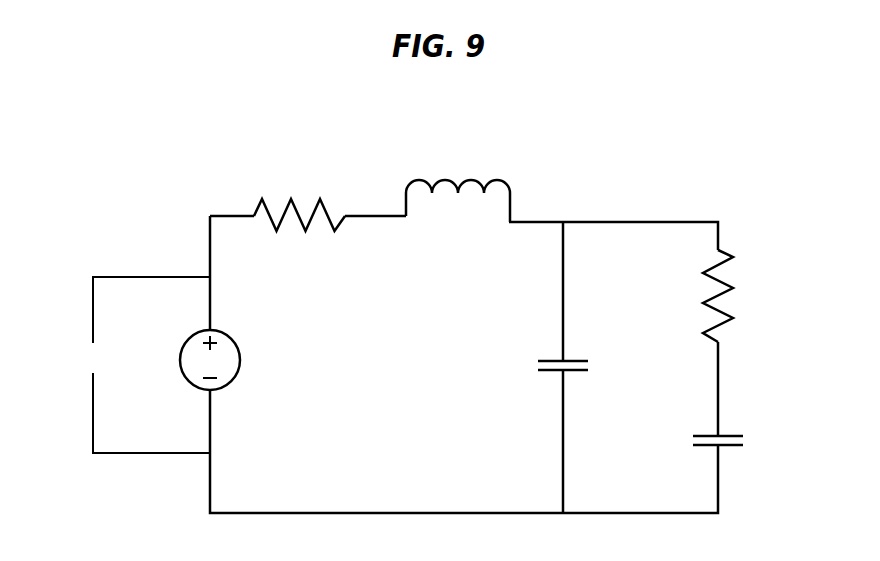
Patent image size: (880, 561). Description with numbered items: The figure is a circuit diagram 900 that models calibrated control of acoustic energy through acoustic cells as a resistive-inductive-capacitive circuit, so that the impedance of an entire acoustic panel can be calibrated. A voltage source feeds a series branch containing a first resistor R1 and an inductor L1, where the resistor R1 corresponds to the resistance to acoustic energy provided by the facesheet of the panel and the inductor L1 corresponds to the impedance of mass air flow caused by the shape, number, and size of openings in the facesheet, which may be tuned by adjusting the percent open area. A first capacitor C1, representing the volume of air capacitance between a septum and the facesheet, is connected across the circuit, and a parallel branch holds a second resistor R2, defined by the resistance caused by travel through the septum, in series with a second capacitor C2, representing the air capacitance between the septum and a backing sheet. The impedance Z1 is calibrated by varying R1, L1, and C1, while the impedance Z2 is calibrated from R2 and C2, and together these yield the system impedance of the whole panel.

The circuit diagram 900 is at (660, 160).
The resistor R1 is at (299, 200).
The inductor L1 is at (458, 185).
The capacitor C1 is at (545, 367).
The resistor R2 is at (738, 296).
The capacitor C2 is at (735, 443).
The first impedance Z1 is at (381, 364).
The second impedance Z2 is at (641, 365).